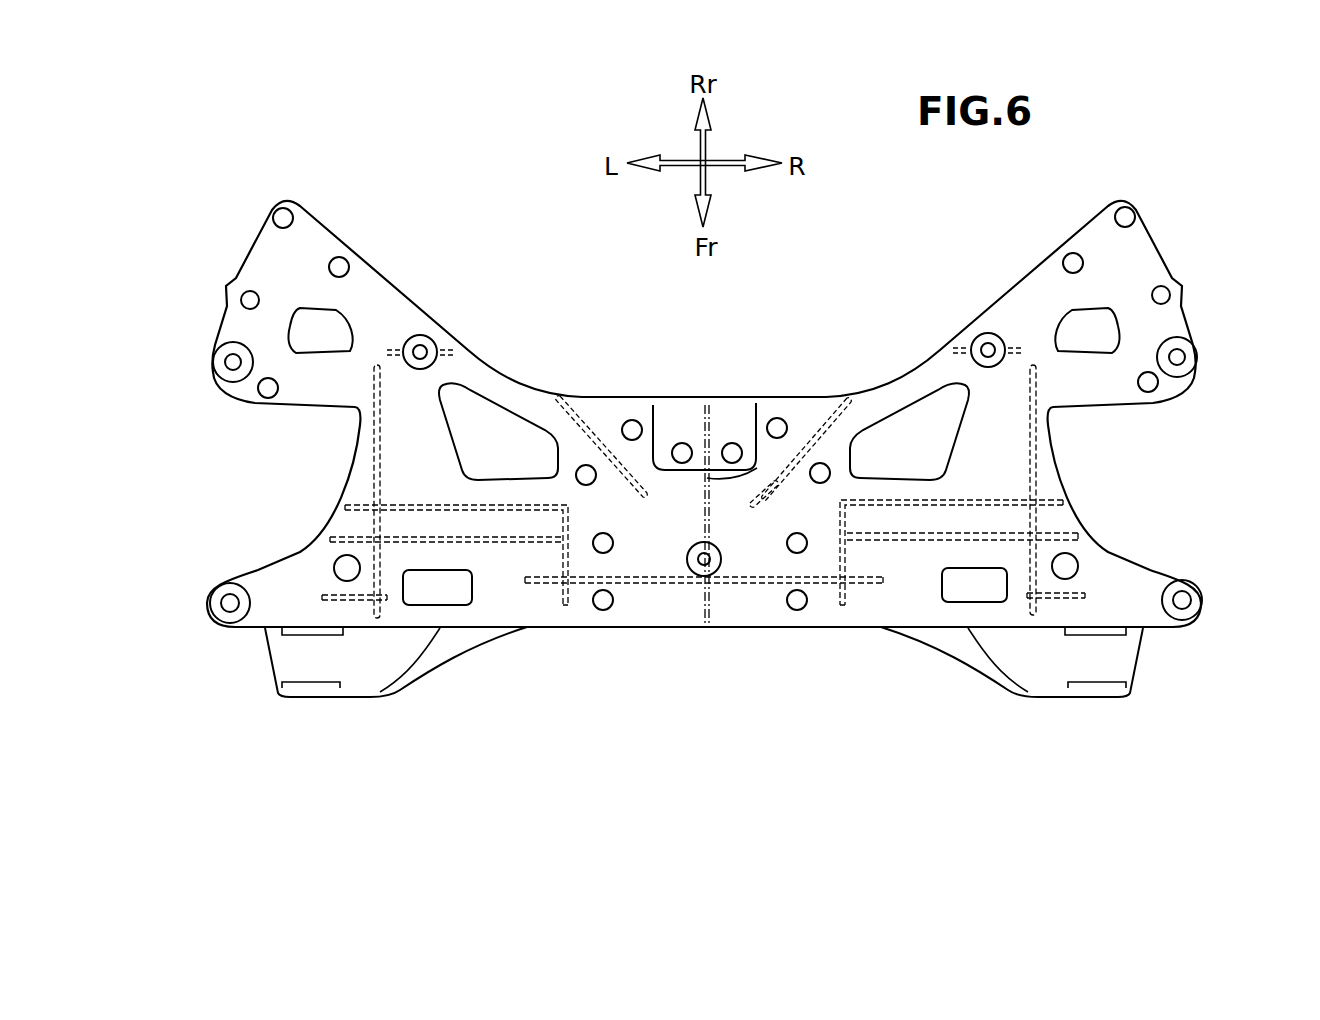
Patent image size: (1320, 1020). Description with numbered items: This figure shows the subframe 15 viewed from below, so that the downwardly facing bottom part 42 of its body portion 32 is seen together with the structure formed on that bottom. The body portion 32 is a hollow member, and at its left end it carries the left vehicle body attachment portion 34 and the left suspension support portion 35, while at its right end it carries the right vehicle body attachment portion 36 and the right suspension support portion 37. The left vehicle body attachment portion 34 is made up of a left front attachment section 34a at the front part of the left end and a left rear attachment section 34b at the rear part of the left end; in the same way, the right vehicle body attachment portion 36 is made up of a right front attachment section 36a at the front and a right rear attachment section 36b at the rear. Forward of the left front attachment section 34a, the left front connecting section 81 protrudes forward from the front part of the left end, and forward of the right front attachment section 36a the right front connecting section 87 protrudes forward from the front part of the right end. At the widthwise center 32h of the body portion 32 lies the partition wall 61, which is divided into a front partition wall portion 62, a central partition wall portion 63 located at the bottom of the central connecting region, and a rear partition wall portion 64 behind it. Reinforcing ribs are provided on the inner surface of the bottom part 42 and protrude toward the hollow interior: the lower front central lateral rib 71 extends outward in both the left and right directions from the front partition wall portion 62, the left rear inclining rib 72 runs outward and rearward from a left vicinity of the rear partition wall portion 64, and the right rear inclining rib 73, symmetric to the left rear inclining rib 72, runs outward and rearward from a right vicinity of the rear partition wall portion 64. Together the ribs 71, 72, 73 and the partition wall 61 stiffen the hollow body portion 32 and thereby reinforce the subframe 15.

The subframe 15 is at (245, 177).
The body portion 32 is at (668, 395).
The widthwise center 32h is at (707, 510).
The left vehicle body attachment portion 34 is at (215, 627).
The left front attachment section 34a is at (210, 610).
The left rear attachment section 34b is at (218, 357).
The left suspension support portion 35 is at (292, 707).
The right vehicle body attachment portion 36 is at (1185, 632).
The right front attachment section 36a is at (1205, 610).
The right rear attachment section 36b is at (1195, 357).
The right suspension support portion 37 is at (1118, 705).
The bottom part 42 is at (747, 553).
The partition wall 61 is at (708, 433).
The front partition wall portion 62 is at (690, 603).
The central partition wall portion 63 is at (713, 530).
The rear partition wall portion 64 is at (757, 493).
The lower front central lateral rib 71 is at (630, 578).
The left rear inclining rib 72 is at (593, 430).
The right rear inclining rib 73 is at (812, 432).
The left front connecting section 81 is at (342, 698).
The right front connecting section 87 is at (1075, 700).